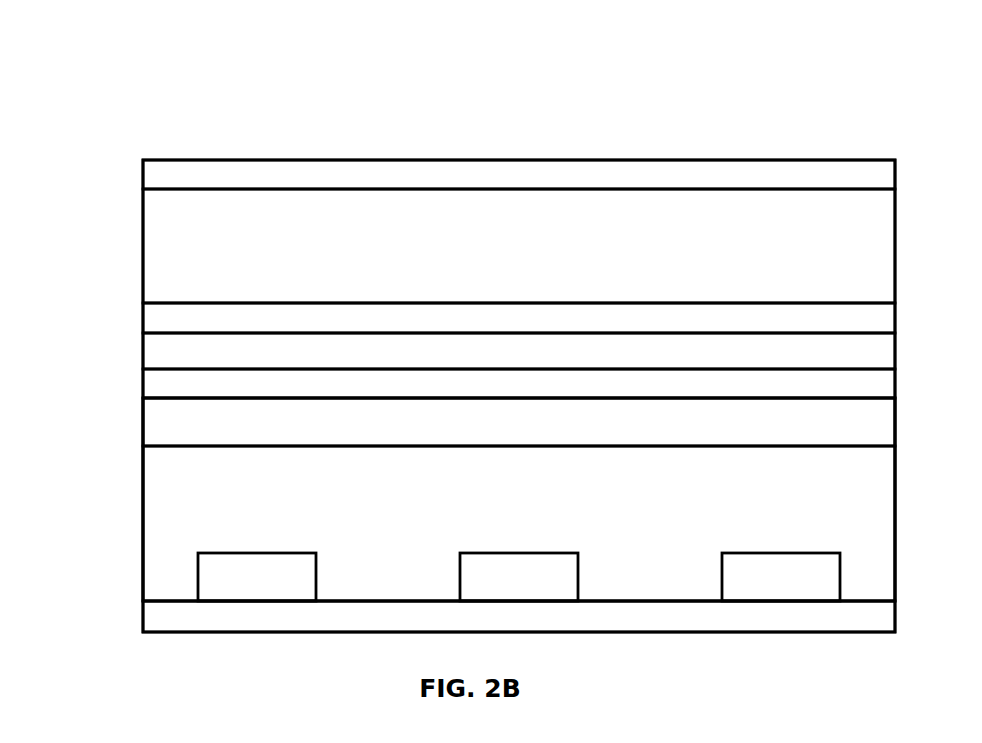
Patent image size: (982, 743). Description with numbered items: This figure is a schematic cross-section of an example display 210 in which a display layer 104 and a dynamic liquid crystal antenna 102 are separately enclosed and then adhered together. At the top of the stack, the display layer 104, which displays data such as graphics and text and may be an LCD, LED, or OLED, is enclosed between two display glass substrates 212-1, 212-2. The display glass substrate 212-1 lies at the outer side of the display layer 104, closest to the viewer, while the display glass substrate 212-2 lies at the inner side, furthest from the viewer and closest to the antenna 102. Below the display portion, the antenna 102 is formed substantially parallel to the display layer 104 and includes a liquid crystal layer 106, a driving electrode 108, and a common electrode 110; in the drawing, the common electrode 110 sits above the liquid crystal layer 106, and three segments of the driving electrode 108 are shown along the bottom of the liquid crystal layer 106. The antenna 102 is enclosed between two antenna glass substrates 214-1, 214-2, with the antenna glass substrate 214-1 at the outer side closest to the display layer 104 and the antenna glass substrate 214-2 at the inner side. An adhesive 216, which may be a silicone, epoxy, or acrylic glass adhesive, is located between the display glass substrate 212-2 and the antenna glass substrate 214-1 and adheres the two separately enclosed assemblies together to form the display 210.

The display 210 is at (702, 118).
The display glass substrate 212-1 is at (490, 187).
The display layer 104 is at (539, 257).
The display glass substrate 212-2 is at (490, 330).
The adhesive 216 is at (539, 364).
The antenna glass substrate 214-1 is at (490, 394).
The dynamic liquid crystal antenna 102 is at (135, 397).
The common electrode 110 is at (539, 432).
The liquid crystal layer 106 is at (539, 511).
The driving electrode 108 is at (277, 587).
The antenna glass substrate 214-2 is at (490, 626).